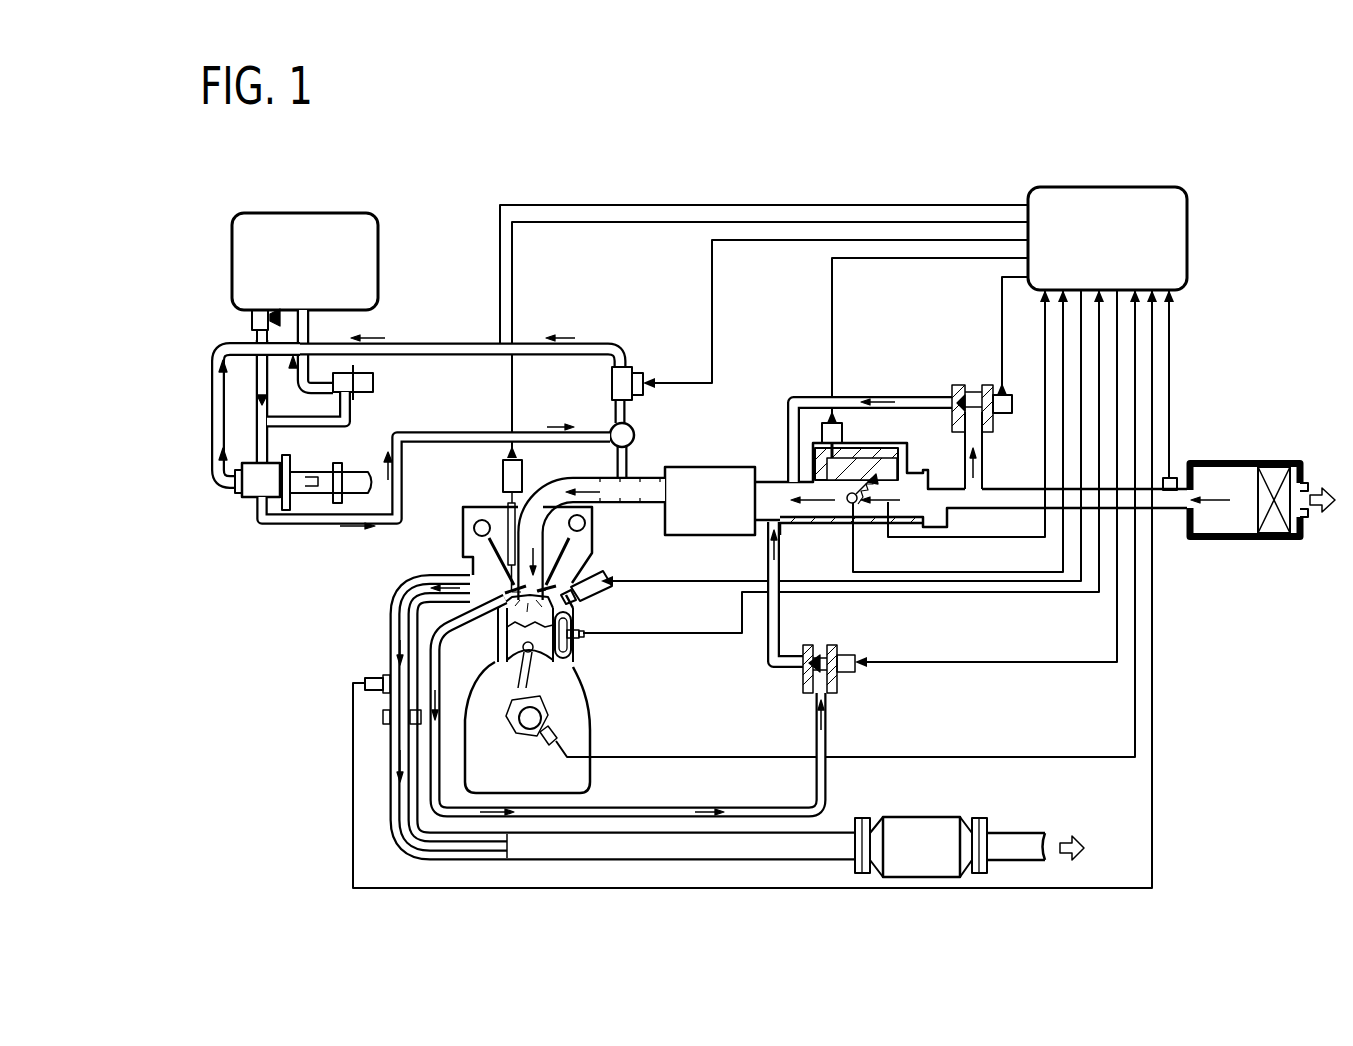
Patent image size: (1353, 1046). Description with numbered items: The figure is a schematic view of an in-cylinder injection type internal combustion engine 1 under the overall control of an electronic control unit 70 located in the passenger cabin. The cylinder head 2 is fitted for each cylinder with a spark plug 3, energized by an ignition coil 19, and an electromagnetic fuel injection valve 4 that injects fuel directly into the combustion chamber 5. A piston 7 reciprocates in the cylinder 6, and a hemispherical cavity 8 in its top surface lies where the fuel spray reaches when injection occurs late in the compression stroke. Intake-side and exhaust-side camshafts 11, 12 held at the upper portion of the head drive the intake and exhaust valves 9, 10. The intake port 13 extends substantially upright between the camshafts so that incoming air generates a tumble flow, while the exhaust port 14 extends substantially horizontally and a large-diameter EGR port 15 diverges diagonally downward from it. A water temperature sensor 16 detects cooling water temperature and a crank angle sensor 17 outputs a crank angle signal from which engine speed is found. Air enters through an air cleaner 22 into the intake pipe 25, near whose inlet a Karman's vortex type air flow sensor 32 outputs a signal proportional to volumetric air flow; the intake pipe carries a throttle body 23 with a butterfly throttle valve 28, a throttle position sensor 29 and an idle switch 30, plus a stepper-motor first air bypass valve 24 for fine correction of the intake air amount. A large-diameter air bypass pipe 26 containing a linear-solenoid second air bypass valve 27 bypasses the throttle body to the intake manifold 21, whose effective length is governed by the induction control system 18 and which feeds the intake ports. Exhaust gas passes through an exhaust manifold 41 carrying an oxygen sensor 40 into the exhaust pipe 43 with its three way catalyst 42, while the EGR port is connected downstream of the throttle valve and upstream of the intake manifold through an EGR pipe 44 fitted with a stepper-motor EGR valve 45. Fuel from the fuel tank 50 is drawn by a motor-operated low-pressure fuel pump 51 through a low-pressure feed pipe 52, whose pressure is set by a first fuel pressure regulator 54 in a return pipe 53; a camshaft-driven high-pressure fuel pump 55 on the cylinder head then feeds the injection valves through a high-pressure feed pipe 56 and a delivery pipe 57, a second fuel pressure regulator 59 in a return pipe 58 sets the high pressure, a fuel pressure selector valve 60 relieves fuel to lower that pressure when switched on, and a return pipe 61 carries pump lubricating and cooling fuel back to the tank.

The engine 1 is at (602, 716).
The cylinder head 2 is at (482, 507).
The spark plug 3 is at (507, 577).
The electromagnetic fuel injection valve 4 is at (598, 598).
The combustion chamber 5 is at (490, 613).
The cylinder 6 is at (573, 667).
The piston 7 is at (498, 648).
The hemispherical cavity 8 is at (573, 623).
The intake valve 9 is at (597, 570).
The exhaust valve 10 is at (482, 537).
The intake-side camshaft 11 is at (583, 527).
The exhaust-side camshaft 12 is at (362, 474).
The intake port 13 is at (527, 492).
The exhaust port 14 is at (498, 583).
The EGR port 15 is at (428, 584).
The water temperature sensor 16 is at (586, 638).
The crank angle sensor 17 is at (558, 734).
The induction control system 18 is at (710, 467).
The ignition coil 19 is at (502, 468).
The intake manifold 21 is at (641, 477).
The air cleaner 22 is at (1270, 460).
The throttle body 23 is at (798, 524).
The first air bypass valve 24 is at (848, 433).
The intake pipe 25 is at (985, 493).
The air bypass pipe 26 is at (893, 397).
The second air bypass valve 27 is at (963, 383).
The throttle valve 28 is at (850, 504).
The throttle position sensor 29 is at (873, 487).
The idle switch 30 is at (856, 505).
The air flow sensor 32 is at (1168, 492).
The O2 sensor 40 is at (365, 680).
The exhaust manifold 41 is at (391, 623).
The three way catalyst 42 is at (903, 823).
The exhaust pipe 43 is at (824, 843).
The EGR pipe 44 is at (815, 776).
The EGR valve 45 is at (850, 688).
The fuel tank 50 is at (379, 222).
The low-pressure fuel pump 51 is at (250, 321).
The low-pressure feed pipe 52 is at (268, 441).
The return pipe 53 is at (350, 409).
The first fuel pressure regulator 54 is at (373, 383).
The high-pressure fuel pump 55 is at (250, 500).
The high-pressure feed pipe 56 is at (278, 524).
The delivery pipe 57 is at (634, 430).
The return pipe 58 is at (536, 343).
The second fuel pressure regulator 59 is at (611, 380).
The fuel pressure selector valve 60 is at (642, 372).
The return pipe 61 is at (217, 412).
The electronic control unit 70 is at (1187, 213).